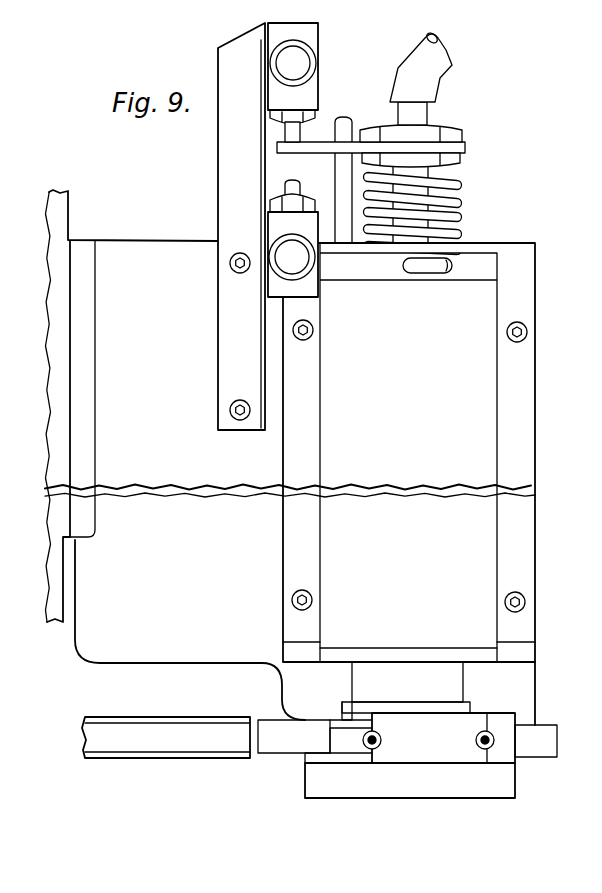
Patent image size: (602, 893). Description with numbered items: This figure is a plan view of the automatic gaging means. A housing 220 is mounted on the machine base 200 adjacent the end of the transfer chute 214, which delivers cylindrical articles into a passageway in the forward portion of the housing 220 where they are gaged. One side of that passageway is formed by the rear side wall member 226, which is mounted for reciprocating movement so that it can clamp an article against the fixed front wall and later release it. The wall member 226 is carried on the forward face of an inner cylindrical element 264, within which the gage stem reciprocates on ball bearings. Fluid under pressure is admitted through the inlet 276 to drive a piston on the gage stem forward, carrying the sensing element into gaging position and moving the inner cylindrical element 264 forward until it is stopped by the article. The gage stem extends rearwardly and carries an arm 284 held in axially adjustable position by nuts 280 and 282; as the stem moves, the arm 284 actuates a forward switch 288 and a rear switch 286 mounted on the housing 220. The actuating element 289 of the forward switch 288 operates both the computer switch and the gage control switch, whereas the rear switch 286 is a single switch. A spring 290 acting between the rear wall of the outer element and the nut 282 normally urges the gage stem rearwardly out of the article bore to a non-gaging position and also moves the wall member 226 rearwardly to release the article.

The machine base 200 is at (62, 221).
The transfer chute 214 is at (214, 720).
The housing 220 is at (485, 450).
The rear side wall member 226 is at (352, 720).
The inner cylindrical element 264 is at (395, 677).
The inlet 276 is at (428, 268).
The nut 280 is at (443, 132).
The nut 282 is at (464, 163).
The arm 284 is at (317, 142).
The rear switch 286 is at (318, 56).
The forward switch 288 is at (272, 283).
The actuating element 289 is at (284, 190).
The spring 290 is at (455, 220).